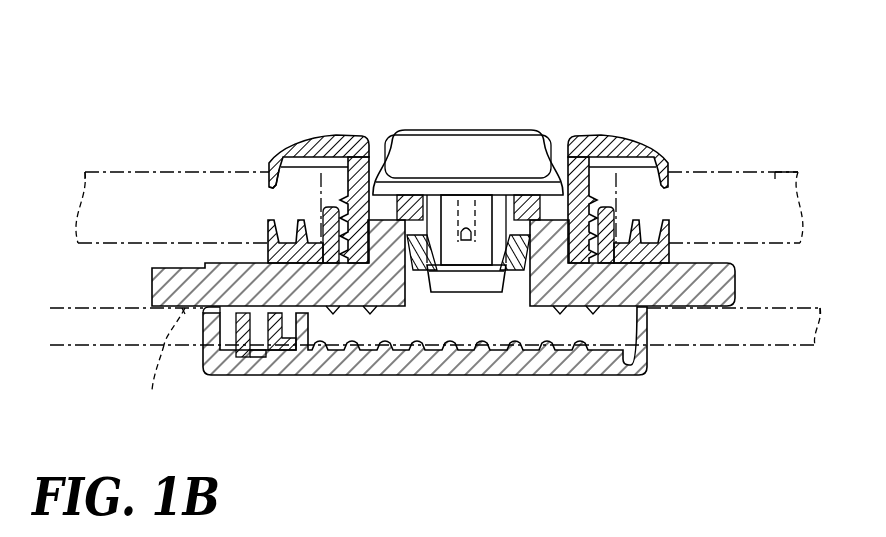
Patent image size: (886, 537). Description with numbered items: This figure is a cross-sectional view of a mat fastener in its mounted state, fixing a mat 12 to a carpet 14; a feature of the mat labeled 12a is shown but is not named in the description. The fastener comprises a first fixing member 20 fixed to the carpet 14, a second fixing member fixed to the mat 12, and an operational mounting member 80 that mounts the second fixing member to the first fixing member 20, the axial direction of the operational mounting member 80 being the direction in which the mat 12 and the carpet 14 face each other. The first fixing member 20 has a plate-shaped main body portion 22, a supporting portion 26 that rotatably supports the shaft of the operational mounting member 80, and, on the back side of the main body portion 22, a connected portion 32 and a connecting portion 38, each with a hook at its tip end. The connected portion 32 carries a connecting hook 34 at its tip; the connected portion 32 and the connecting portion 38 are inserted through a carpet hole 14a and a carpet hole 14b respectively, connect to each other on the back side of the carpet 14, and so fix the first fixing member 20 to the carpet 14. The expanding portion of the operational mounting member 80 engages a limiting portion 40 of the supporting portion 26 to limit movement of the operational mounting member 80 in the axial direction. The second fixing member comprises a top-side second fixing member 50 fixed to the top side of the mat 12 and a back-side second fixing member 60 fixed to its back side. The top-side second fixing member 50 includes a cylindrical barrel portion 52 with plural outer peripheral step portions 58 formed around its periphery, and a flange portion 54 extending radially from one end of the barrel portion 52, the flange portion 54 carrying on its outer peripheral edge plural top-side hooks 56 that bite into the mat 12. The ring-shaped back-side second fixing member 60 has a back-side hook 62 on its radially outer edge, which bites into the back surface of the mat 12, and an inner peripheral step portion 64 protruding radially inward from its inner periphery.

The mat 12 is at (776, 175).
The opening edge of upper panel 12a is at (620, 207).
The carpet 14 is at (787, 330).
The carpet hole 14a is at (624, 322).
The carpet hole 14b is at (144, 382).
The first fixing member 20 is at (670, 285).
The main body portion 22 is at (157, 287).
The supporting portion 26 is at (549, 292).
The connected portion 32 is at (487, 365).
The connecting hook 34 is at (236, 332).
The connecting portion 38 is at (282, 338).
The limiting portion 40 is at (410, 236).
The top-side second fixing member 50 is at (588, 148).
The barrel portion 52 is at (372, 190).
The flange portion 54 is at (342, 142).
The top-side hooks 56 is at (266, 186).
The outer peripheral step portions 58 is at (603, 182).
The back-side second fixing member 60 is at (259, 235).
The back-side hook 62 is at (678, 236).
The inner peripheral step portion 64 is at (333, 262).
The operational mounting member 80 is at (477, 152).